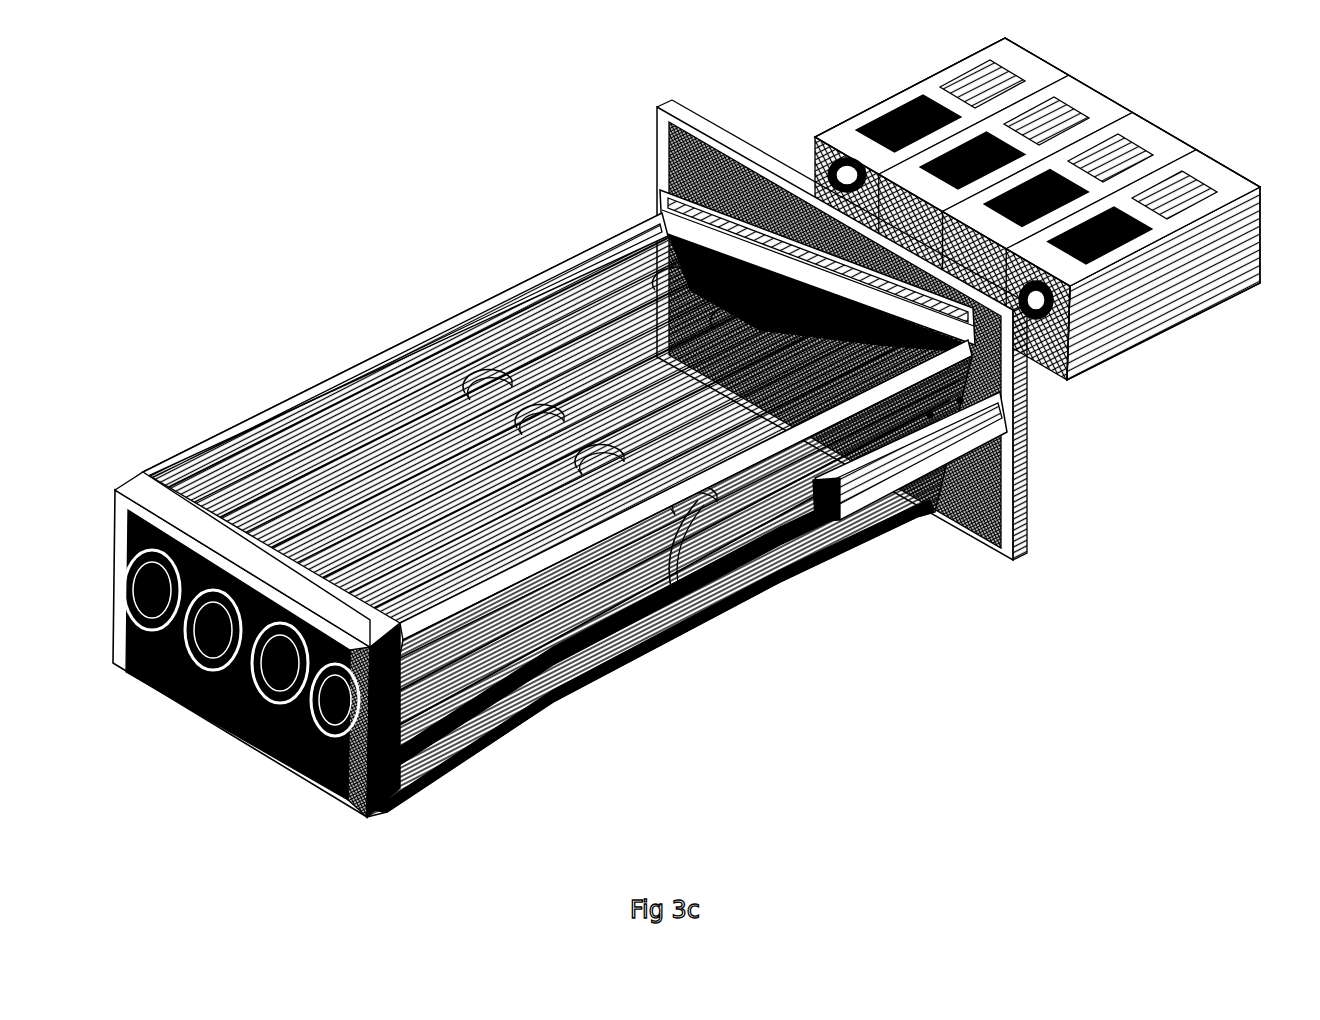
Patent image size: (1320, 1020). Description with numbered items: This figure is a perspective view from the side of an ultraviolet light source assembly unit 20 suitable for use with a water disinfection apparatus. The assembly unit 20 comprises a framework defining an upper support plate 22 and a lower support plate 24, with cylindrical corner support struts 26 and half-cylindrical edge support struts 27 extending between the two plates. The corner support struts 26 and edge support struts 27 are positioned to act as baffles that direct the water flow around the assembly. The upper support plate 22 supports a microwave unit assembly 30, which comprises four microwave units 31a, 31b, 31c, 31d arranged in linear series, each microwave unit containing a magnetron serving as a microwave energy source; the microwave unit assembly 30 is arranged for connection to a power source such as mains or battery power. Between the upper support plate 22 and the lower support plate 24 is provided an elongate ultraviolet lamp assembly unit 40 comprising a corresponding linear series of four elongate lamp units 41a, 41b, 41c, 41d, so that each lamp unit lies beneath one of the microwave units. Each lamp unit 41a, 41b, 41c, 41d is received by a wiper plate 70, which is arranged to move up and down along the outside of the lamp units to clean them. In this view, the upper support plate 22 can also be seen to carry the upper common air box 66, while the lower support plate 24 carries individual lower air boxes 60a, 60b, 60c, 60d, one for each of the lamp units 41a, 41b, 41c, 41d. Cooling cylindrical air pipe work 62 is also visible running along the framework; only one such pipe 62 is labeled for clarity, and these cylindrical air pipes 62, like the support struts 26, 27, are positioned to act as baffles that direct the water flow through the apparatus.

The ultraviolet light source assembly unit 20 is at (701, 448).
The upper support plate 22 is at (1027, 522).
The lower support plate 24 is at (367, 817).
The cylindrical corner support struts 26 is at (548, 706).
The half-cylindrical edge support struts 27 is at (607, 677).
The microwave unit assembly 30 is at (1065, 214).
The microwave unit 31a is at (1232, 177).
The microwave unit 31b is at (1160, 128).
The microwave unit 31c is at (1097, 85).
The microwave unit 31d is at (1035, 53).
The elongate ultraviolet lamp assembly unit 40 is at (547, 520).
The elongate lamp unit 41a is at (713, 480).
The elongate lamp unit 41b is at (640, 440).
The elongate lamp unit 41c is at (577, 380).
The elongate lamp unit 41d is at (463, 393).
The lower air box 60a is at (307, 787).
The lower air box 60b is at (230, 733).
The lower air box 60c is at (163, 700).
The lower air box 60d is at (113, 663).
The cooling cylindrical air pipe 62 is at (298, 452).
The upper common air box 66 is at (933, 517).
The wiper plate 70 is at (680, 590).